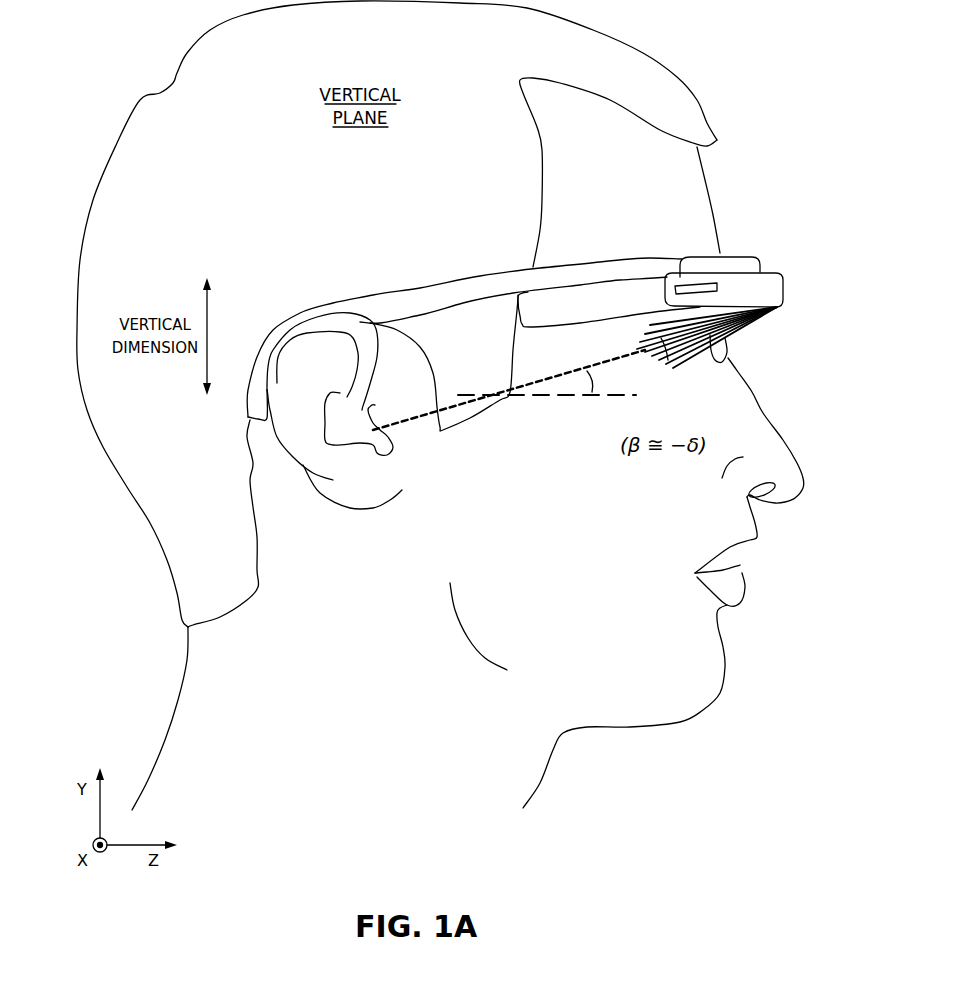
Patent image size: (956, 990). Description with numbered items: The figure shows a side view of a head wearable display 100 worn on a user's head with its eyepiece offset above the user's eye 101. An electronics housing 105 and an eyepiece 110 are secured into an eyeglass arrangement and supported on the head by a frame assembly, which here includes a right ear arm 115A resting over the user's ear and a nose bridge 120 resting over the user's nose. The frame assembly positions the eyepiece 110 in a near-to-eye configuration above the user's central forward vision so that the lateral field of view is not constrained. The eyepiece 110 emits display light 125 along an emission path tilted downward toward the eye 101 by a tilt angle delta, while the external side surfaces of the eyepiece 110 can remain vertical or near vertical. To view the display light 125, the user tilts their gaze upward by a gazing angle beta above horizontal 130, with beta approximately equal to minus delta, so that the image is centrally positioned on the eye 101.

The head wearable display 100 is at (546, 298).
The eye 101 is at (656, 356).
The electronics housing 105 is at (589, 313).
The eyepiece 110 is at (790, 272).
The right ear arm 115A is at (443, 290).
The nose bridge 120 is at (720, 348).
The display light 125 is at (748, 322).
The horizontal 130 is at (553, 398).